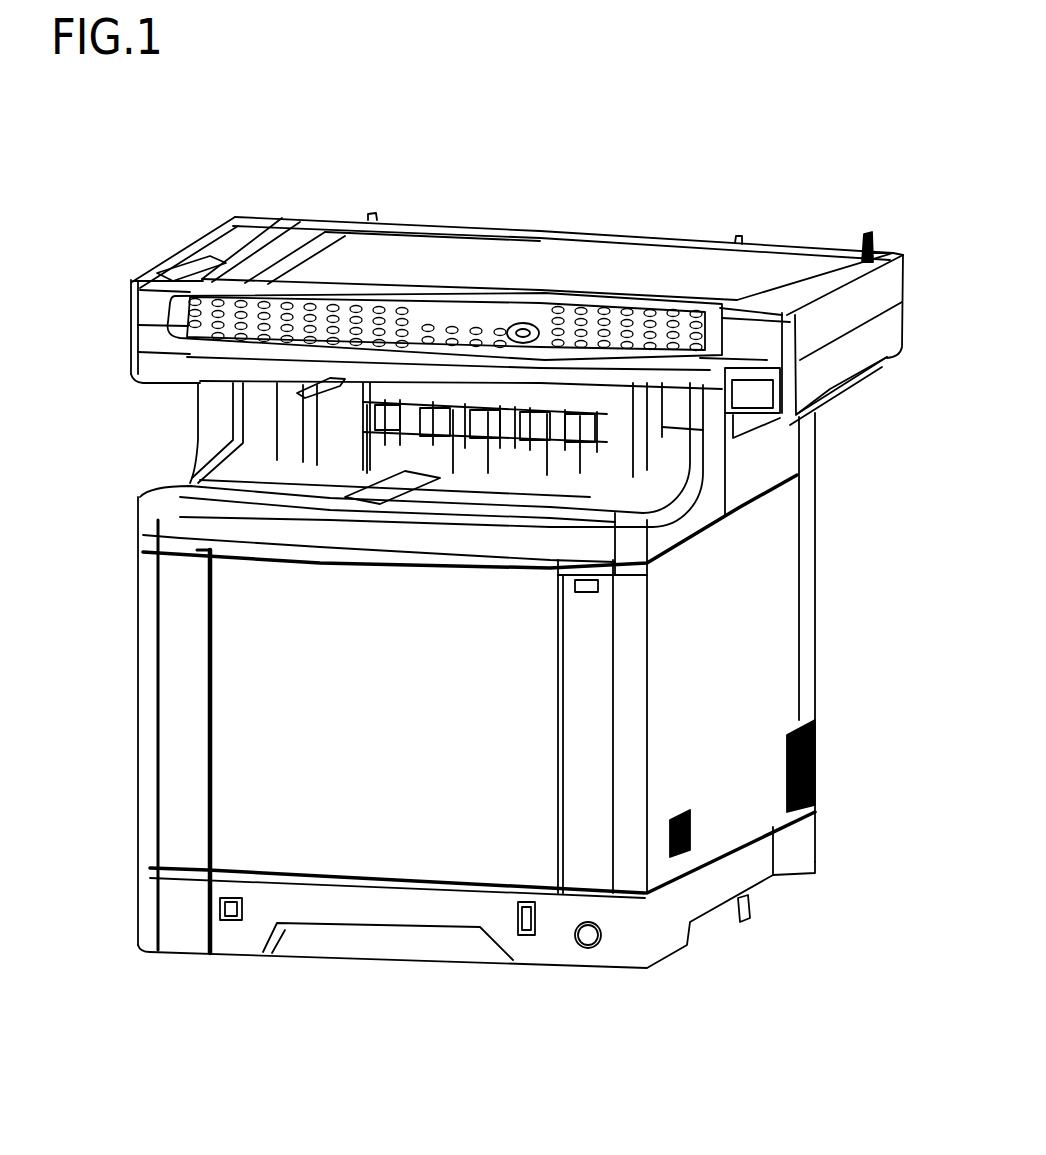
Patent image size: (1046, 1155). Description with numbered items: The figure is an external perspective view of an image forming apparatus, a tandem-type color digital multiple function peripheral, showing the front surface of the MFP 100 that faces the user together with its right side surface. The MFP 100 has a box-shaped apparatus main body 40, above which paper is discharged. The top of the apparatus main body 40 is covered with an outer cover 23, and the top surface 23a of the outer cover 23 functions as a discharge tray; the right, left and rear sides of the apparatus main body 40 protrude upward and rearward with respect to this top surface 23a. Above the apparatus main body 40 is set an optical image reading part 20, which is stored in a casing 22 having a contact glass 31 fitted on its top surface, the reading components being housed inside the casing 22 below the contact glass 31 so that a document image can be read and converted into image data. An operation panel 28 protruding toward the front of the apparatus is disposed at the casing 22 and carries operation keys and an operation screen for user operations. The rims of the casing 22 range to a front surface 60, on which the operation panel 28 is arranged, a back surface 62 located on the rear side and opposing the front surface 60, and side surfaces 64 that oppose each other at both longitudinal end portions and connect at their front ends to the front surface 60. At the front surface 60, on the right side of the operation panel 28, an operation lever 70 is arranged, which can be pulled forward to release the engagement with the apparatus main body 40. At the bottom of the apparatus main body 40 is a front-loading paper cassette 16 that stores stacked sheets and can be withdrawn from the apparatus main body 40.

The MFP 100 is at (130, 195).
The image reading part 20 is at (572, 280).
The contact glass 31 is at (393, 258).
The operation panel 28 is at (440, 328).
The front surface 60 is at (158, 303).
The back surface 62 is at (905, 282).
The side surface 64 is at (128, 300).
The casing 22 is at (880, 360).
The operation lever 70 is at (760, 393).
The outer cover 23 is at (252, 480).
The top surface 23a is at (530, 492).
The apparatus main body 40 is at (775, 652).
The paper cassette 16 is at (373, 907).